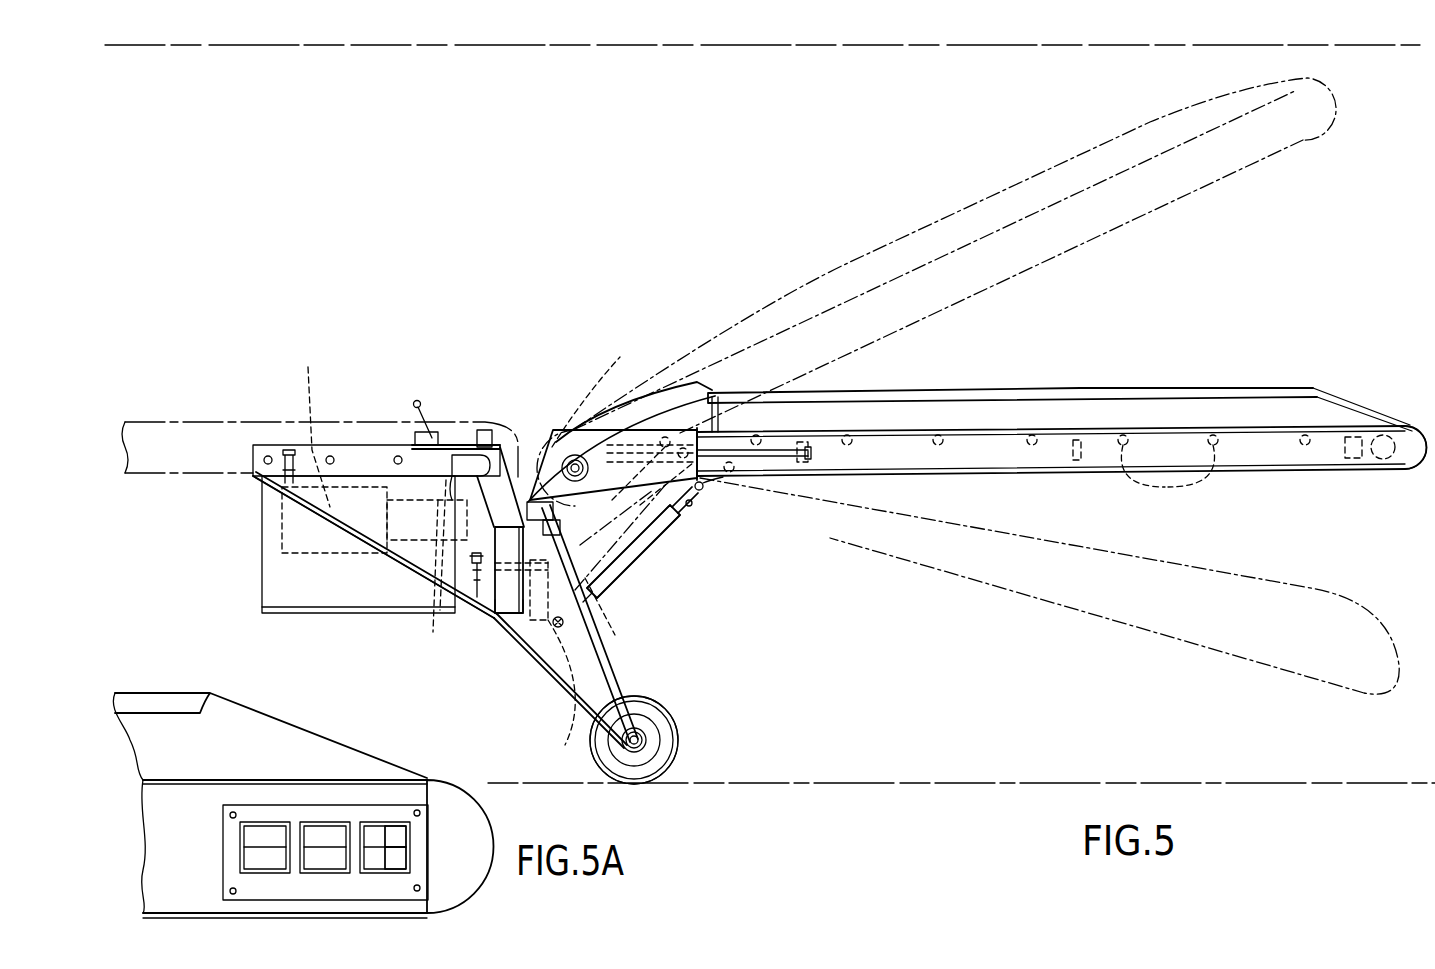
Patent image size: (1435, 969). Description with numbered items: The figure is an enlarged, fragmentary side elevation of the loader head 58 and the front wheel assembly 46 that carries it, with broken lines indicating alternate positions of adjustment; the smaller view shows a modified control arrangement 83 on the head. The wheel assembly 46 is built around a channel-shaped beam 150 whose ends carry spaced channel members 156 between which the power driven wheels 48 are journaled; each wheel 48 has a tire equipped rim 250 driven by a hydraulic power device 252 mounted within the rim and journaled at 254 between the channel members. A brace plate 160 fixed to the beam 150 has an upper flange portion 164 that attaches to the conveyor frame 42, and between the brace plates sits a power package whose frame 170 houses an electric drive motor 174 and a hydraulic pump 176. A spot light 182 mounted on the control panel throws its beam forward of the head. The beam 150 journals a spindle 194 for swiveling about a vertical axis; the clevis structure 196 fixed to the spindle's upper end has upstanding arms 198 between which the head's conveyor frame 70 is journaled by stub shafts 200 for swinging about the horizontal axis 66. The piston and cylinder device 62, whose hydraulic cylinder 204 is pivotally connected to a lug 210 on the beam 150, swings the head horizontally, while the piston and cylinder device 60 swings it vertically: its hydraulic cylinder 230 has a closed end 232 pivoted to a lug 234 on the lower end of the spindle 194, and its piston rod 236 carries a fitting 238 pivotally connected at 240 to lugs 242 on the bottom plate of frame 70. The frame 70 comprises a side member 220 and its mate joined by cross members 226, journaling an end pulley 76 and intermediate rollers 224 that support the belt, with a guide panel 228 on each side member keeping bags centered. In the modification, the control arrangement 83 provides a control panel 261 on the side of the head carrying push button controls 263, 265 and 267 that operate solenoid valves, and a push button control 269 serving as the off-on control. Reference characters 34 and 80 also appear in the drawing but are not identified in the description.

In FIG. 5, the arm end pulley 34 is at (1408, 423).
In FIG. 5, the conveyor frame 42 is at (188, 396).
In FIG. 5, the front wheel assembly 46 is at (410, 684).
In FIG. 5, the power driven wheels 48 is at (703, 720).
In FIG. 5, the loader head 58 is at (1313, 291).
In FIG. 5, the piston and cylinder device 60 is at (660, 577).
In FIG. 5, the piston and cylinder device 62 is at (488, 568).
In FIG. 5, the horizontal axis 66 is at (572, 430).
In FIG. 5, the conveyor frame 70 is at (1257, 453).
In FIG. 5, the end roller 76 is at (597, 392).
In FIG. 5, the hydraulic unit 80 is at (240, 573).
In FIG. 5A, the control arrangement 83 is at (275, 881).
In FIG. 5, the beam 150 is at (521, 620).
In FIG. 5, the channel member 156 is at (553, 677).
In FIG. 5, the brace plate 160 is at (428, 562).
In FIG. 5, the upper flange portion 164 is at (362, 445).
In FIG. 5, the frame 170 is at (320, 600).
In FIG. 5, the electric drive motor 174 is at (310, 425).
In FIG. 5, the hydraulic pump 176 is at (432, 566).
In FIG. 5, the spot light 182 is at (487, 432).
In FIG. 5, the spindle 194 is at (560, 530).
In FIG. 5, the clevis structure 196 is at (527, 462).
In FIG. 5, the upstanding arms 198 is at (553, 443).
In FIG. 5, the stub shafts 200 is at (699, 383).
In FIG. 5, the hydraulic cylinder 204 is at (480, 566).
In FIG. 5, the lug 210 is at (510, 625).
In FIG. 5, the side member 220 is at (1323, 457).
In FIG. 5, the intermediate rollers 224 is at (1167, 477).
In FIG. 5, the cross members 226 is at (808, 465).
In FIG. 5, the guide panel 228 is at (1238, 405).
In FIG. 5, the hydraulic cylinder 230 is at (613, 580).
In FIG. 5, the closed end 232 is at (606, 661).
In FIG. 5, the lug 234 is at (580, 674).
In FIG. 5, the piston rod 236 is at (672, 528).
In FIG. 5, the fitting 238 is at (694, 507).
In FIG. 5, the pivotal connection 240 is at (703, 490).
In FIG. 5, the lugs 242 is at (723, 477).
In FIG. 5, the tire equipped rim 250 is at (678, 748).
In FIG. 5, the hydraulic power device 252 is at (652, 753).
In FIG. 5, the journal 254 is at (649, 732).
In FIG. 5A, the control panel 261 is at (296, 816).
In FIG. 5A, the push button control 263 is at (256, 816).
In FIG. 5A, the push button control 265 is at (322, 816).
In FIG. 5A, the push button control 267 is at (392, 816).
In FIG. 5A, the push button control 269 is at (381, 882).